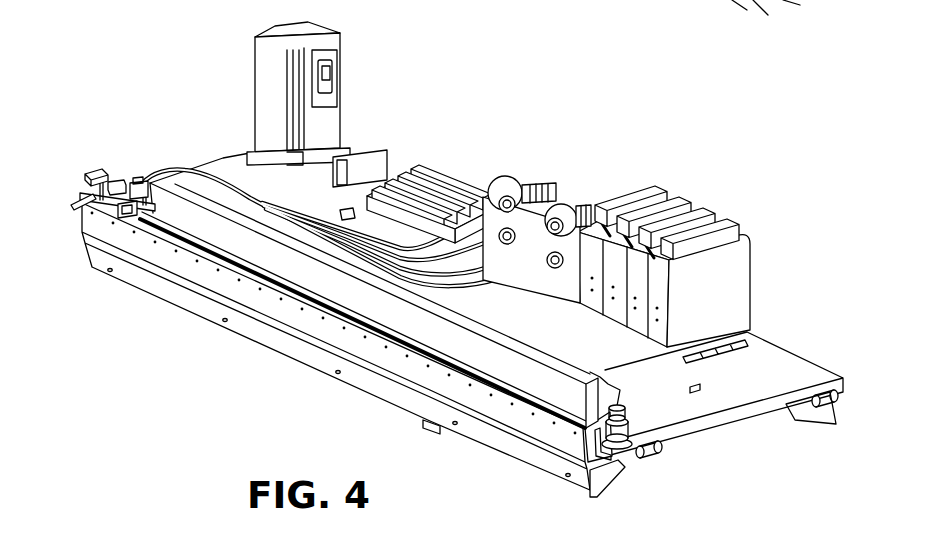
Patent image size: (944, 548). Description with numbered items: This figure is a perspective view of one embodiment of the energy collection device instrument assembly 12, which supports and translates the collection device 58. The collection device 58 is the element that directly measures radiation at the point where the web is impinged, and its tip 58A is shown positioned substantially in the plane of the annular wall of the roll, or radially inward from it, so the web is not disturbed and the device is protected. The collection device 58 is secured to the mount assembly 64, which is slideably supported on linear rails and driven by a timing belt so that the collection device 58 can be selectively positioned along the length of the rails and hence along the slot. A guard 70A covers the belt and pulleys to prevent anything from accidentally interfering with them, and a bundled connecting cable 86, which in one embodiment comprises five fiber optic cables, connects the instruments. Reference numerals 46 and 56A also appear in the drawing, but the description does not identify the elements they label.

The instrument assembly 12 is at (770, 210).
The component 46 is at (525, 10).
The component 56A is at (745, 1).
The collection device 58 is at (78, 197).
The tip 58A is at (76, 208).
The mount assembly 64 is at (120, 165).
The guard 70A is at (293, 195).
The bundled connecting cable 86 is at (260, 200).